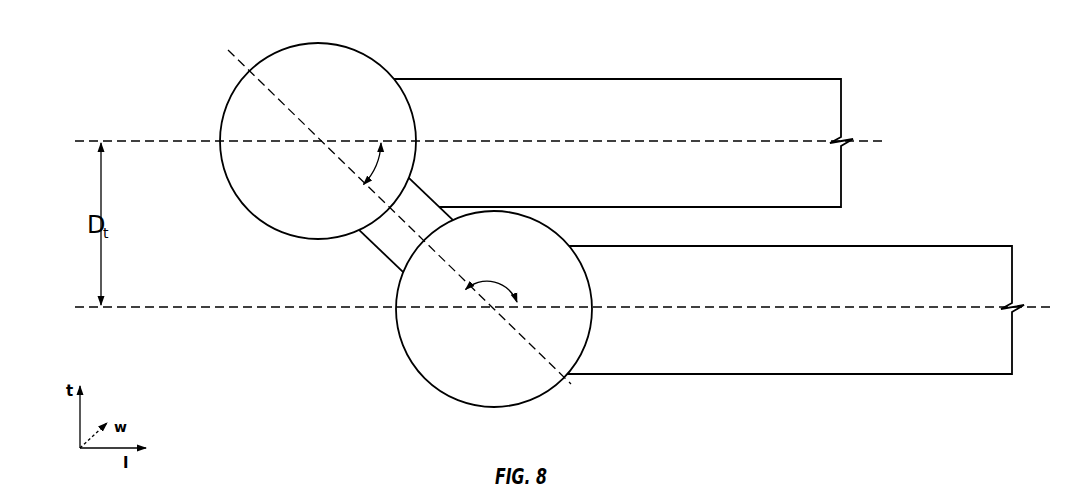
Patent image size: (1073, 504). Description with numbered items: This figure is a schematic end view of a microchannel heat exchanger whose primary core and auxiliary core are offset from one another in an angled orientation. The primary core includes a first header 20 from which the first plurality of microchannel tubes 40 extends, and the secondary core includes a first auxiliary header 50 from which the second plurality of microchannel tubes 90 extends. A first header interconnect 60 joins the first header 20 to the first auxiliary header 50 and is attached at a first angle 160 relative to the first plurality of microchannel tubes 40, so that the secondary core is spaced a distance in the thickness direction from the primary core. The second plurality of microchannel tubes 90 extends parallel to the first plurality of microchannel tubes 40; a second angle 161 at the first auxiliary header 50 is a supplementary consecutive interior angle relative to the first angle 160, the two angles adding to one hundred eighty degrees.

The first header 20 is at (264, 223).
The first plurality of microchannel tubes 40 is at (724, 79).
The first auxiliary header 50 is at (438, 389).
The first header interconnect 60 is at (378, 255).
The second plurality of microchannel tubes 90 is at (858, 374).
The first angle 160 is at (378, 168).
The second angle 161 is at (499, 281).